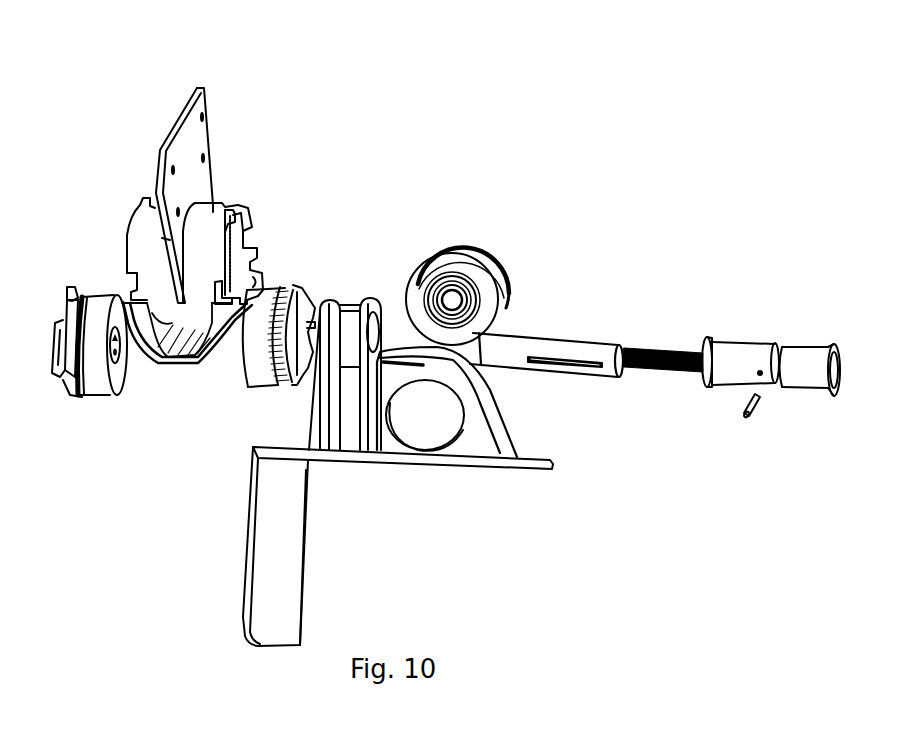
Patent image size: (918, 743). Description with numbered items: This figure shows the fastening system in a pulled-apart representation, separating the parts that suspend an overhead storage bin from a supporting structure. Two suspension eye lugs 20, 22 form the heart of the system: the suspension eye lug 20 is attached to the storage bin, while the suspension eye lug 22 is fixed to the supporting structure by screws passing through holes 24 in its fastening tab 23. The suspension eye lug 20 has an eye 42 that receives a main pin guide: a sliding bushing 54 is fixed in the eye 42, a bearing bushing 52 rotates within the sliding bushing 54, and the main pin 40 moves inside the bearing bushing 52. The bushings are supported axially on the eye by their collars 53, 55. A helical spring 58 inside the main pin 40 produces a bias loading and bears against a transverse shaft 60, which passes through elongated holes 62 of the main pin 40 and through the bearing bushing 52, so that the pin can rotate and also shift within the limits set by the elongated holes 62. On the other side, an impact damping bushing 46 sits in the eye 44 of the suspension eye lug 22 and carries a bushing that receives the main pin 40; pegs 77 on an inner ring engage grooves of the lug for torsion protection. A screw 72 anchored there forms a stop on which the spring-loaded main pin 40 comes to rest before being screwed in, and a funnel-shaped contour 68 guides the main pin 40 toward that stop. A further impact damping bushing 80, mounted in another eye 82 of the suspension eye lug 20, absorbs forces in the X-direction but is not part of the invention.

The suspension eye lug 20 is at (373, 303).
The suspension eye lug 22 is at (205, 371).
The fastening tab 23 is at (212, 183).
The holes 24 is at (208, 105).
The main pin 40 is at (523, 338).
The eye 42 is at (387, 303).
The eye 44 is at (247, 205).
The impact damping bushing 46 is at (252, 378).
The bearing bushing 52 is at (744, 357).
The collar 53 is at (708, 350).
The sliding bushing 54 is at (818, 345).
The collar 55 is at (834, 345).
The helical spring 58 is at (655, 340).
The transverse shaft 60 is at (737, 412).
The elongated holes 62 is at (580, 370).
The funnel-shaped contour 68 is at (319, 303).
The screw 72 is at (118, 367).
The pegs 77 is at (296, 278).
The impact damping bushing 80 is at (458, 250).
The eye 82 is at (430, 430).